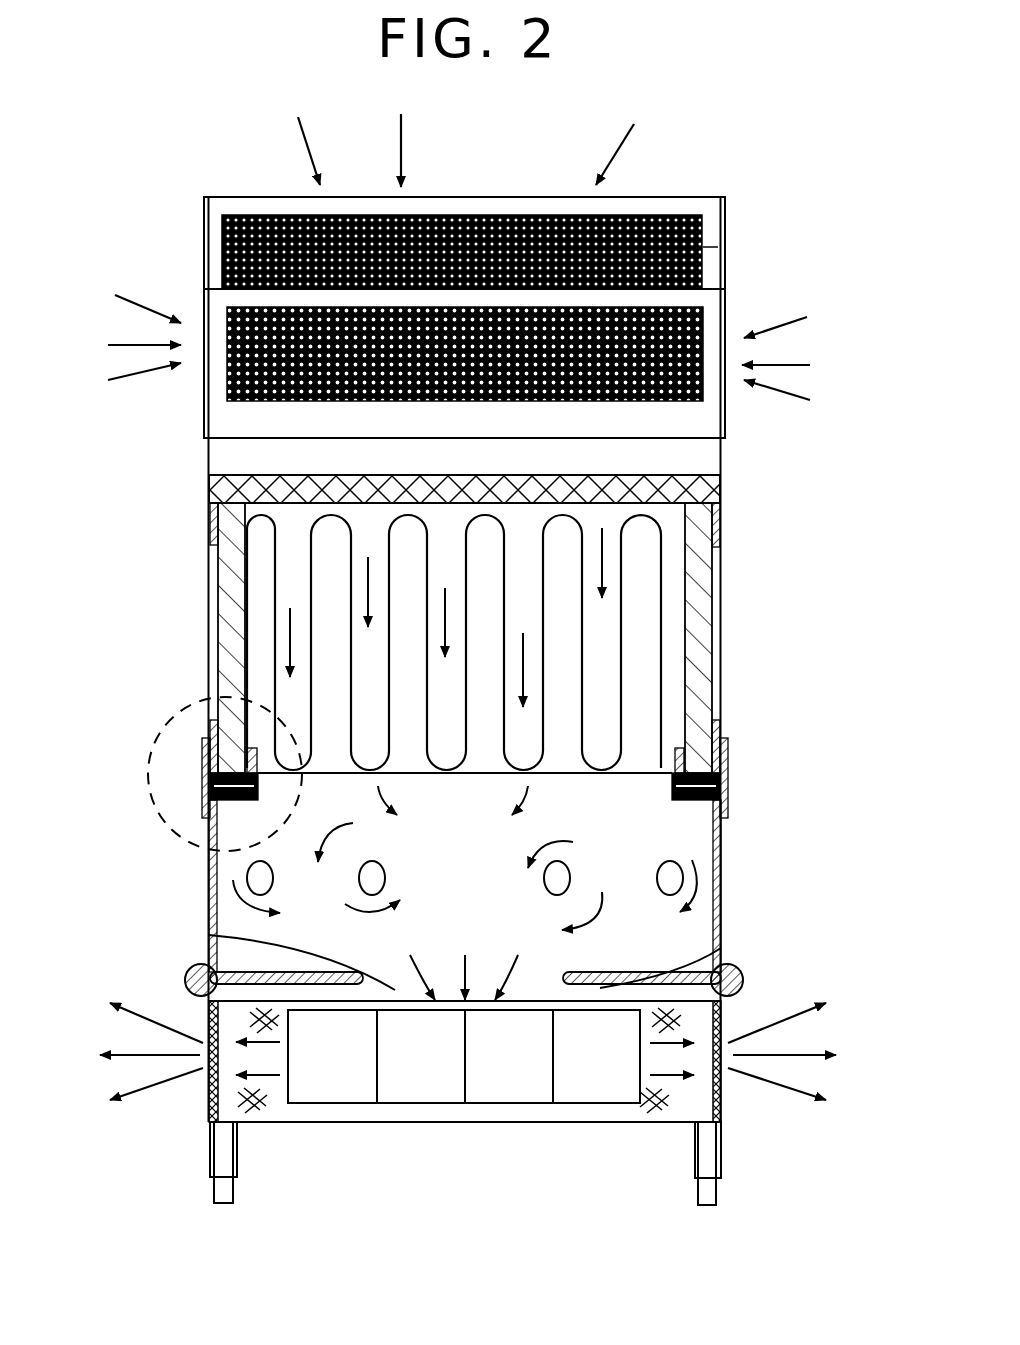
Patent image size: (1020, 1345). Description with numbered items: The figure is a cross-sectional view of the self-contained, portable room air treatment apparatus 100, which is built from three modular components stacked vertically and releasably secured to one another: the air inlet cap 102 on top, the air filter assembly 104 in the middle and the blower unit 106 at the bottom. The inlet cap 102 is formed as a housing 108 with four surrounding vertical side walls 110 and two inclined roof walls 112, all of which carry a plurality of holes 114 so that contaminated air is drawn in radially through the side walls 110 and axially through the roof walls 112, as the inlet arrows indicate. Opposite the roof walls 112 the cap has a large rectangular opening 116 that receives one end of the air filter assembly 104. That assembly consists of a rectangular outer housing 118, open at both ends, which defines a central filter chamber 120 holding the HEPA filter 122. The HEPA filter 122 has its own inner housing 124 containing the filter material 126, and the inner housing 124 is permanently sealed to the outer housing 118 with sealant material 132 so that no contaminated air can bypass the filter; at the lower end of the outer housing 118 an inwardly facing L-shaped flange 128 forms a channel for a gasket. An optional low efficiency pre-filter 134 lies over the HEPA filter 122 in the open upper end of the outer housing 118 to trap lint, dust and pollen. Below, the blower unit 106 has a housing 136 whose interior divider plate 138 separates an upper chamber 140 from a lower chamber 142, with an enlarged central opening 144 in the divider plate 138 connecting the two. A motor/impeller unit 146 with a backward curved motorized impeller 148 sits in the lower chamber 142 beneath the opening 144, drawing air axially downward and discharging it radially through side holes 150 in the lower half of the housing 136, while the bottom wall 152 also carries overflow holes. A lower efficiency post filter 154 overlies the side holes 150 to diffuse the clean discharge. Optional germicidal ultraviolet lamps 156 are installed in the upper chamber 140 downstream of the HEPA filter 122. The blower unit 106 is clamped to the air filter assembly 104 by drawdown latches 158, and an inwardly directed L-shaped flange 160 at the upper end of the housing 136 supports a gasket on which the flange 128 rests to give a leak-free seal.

The room air treatment apparatus 100 is at (742, 185).
The air inlet cap 102 is at (729, 320).
The air filter assembly 104 is at (723, 700).
The blower unit 106 is at (724, 922).
The housing 108 is at (495, 196).
The vertical side walls 110 is at (228, 418).
The inclined roof walls 112 is at (703, 247).
The holes 114 is at (262, 215).
The rectangular opening 116 is at (227, 438).
The outer housing 118 is at (722, 612).
The filter chamber 120 is at (278, 458).
The HEPA filter 122 is at (238, 701).
The inner housing 124 is at (236, 585).
The filter material 126 is at (582, 708).
The L-shaped flange 128 is at (278, 774).
The sealant material 132 is at (209, 525).
The pre-filter 134 is at (693, 480).
The housing 136 is at (723, 858).
The divider plate 138 is at (672, 973).
The upper chamber 140 is at (460, 903).
The lower chamber 142 is at (673, 1097).
The central opening 144 is at (210, 936).
The motor/impeller unit 146 is at (338, 1106).
The backward curved motorized impeller 148 is at (466, 1060).
The side holes 150 is at (190, 976).
The bottom wall 152 is at (584, 1123).
The post filter 154 is at (212, 1100).
The ultraviolet lamps 156 is at (357, 878).
The drawdown latches 158 is at (203, 778).
The L-shaped flange 160 is at (243, 800).